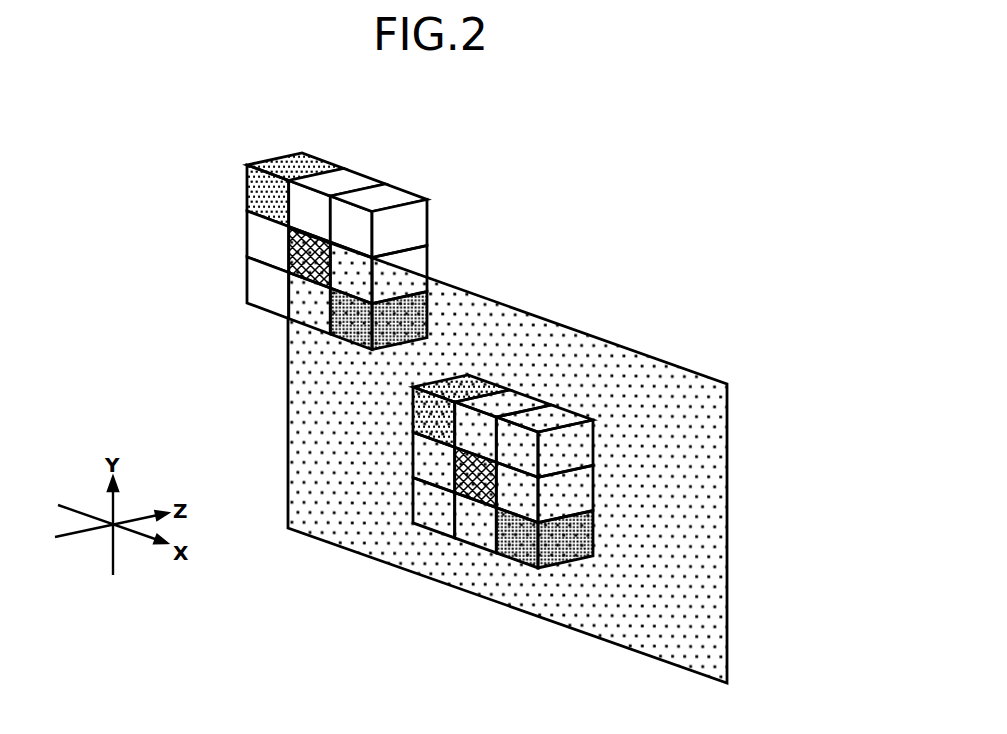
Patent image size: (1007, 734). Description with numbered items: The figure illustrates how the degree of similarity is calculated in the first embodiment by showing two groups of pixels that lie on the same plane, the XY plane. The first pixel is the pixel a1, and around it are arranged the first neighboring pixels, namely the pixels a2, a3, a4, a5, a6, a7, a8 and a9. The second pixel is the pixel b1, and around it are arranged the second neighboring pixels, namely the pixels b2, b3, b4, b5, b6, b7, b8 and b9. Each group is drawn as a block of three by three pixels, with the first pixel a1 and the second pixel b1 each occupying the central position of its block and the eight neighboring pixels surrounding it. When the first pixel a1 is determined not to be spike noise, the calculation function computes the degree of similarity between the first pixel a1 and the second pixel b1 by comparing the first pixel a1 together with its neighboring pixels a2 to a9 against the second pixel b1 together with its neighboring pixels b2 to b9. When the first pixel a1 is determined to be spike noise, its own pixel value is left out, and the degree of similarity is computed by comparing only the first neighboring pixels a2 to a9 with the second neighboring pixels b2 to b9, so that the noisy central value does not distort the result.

The pixel a1 is at (465, 475).
The pixel a2 is at (462, 380).
The pixel a3 is at (502, 402).
The pixel a4 is at (541, 420).
The pixel a5 is at (423, 467).
The pixel a6 is at (567, 496).
The pixel a7 is at (432, 513).
The pixel a8 is at (480, 525).
The pixel a9 is at (567, 544).
The pixel b1 is at (303, 257).
The pixel b2 is at (296, 163).
The pixel b3 is at (335, 183).
The pixel b4 is at (378, 198).
The pixel b5 is at (257, 247).
The pixel b6 is at (400, 273).
The pixel b7 is at (257, 280).
The pixel b8 is at (305, 308).
The pixel b9 is at (413, 300).